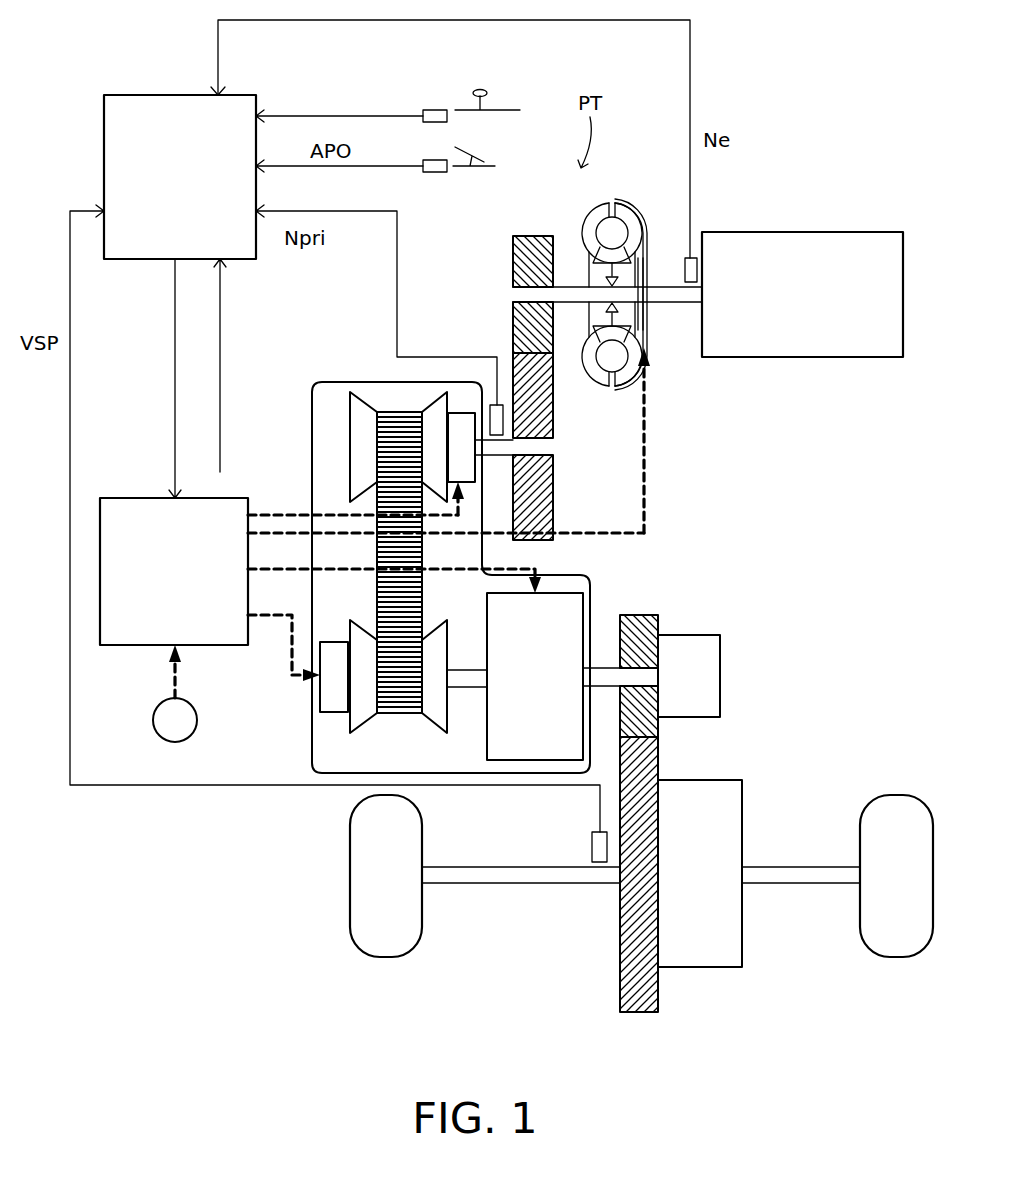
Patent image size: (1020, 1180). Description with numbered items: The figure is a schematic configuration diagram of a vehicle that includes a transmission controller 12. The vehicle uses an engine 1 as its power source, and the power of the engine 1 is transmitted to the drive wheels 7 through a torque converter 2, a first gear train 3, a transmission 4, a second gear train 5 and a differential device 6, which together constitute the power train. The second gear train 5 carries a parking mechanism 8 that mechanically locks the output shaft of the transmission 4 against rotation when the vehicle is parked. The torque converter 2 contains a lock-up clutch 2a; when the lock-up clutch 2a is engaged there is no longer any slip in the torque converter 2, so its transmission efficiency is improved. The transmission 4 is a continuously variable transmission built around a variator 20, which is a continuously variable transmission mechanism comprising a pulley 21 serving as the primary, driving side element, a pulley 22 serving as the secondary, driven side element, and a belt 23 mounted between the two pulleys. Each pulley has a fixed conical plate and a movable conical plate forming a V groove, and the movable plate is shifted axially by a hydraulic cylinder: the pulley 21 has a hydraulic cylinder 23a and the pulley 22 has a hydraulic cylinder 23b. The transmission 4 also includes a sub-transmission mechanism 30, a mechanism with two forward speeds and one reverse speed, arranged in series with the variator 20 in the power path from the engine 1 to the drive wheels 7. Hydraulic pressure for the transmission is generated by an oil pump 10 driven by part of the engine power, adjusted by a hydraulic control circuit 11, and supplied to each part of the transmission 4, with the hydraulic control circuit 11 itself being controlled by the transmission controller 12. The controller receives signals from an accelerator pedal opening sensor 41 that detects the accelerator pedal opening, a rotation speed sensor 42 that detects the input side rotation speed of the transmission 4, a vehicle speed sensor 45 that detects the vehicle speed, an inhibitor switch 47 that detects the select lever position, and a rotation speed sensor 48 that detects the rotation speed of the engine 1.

The engine 1 is at (888, 248).
The torque converter 2 is at (639, 347).
The lock-up clutch 2a is at (645, 340).
The first gear train 3 is at (541, 222).
The transmission 4 is at (370, 528).
The second gear train 5 is at (645, 1024).
The differential device 6 is at (700, 953).
The drive wheels 7 is at (387, 940).
The parking mechanism 8 is at (703, 667).
The oil pump 10 is at (155, 706).
The hydraulic control circuit 11 is at (125, 503).
The transmission controller 12 is at (240, 103).
The variator 20 is at (334, 406).
The pulley 21 is at (365, 445).
The pulley 22 is at (365, 697).
The belt 23 is at (398, 412).
The hydraulic cylinder 23a is at (457, 427).
The hydraulic cylinder 23b is at (330, 686).
The sub-transmission mechanism 30 is at (572, 606).
The accelerator pedal opening sensor 41 is at (432, 176).
The rotation speed sensor 42 is at (497, 420).
The vehicle speed sensor 45 is at (598, 846).
The inhibitor switch 47 is at (432, 106).
The rotation speed sensor 48 is at (688, 268).